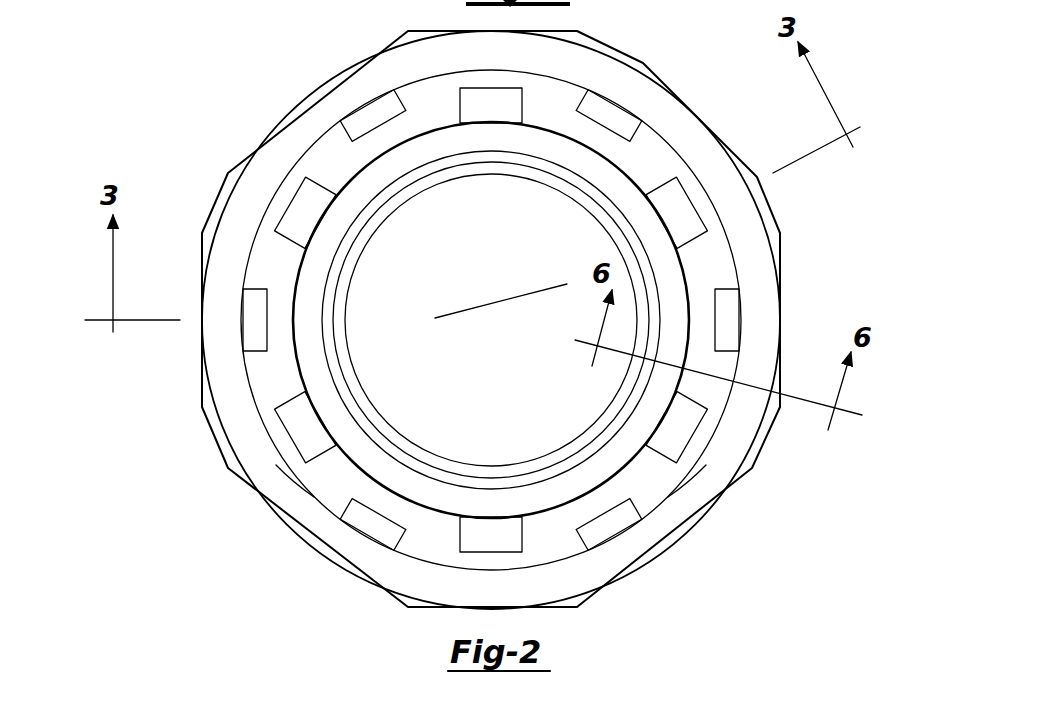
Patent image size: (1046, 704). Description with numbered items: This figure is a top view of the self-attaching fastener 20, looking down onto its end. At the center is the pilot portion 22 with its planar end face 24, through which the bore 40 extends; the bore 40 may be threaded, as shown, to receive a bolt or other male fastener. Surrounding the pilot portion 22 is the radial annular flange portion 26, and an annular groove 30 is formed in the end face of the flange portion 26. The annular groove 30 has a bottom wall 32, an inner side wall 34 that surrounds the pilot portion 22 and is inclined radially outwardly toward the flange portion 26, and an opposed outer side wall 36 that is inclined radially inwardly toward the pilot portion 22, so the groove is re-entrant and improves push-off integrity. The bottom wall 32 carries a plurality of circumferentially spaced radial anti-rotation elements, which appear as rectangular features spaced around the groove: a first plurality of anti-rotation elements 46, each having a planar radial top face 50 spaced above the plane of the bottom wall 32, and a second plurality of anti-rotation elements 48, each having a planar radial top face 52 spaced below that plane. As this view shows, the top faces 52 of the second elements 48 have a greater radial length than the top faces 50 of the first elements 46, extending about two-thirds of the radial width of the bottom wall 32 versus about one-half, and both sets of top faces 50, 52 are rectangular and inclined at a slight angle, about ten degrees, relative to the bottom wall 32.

The self-attaching fastener 20 is at (277, 96).
The central pilot portion 22 is at (622, 190).
The end face of the pilot portion 24 is at (438, 143).
The radial annular flange portion 26 is at (760, 332).
The annular groove 30 is at (331, 490).
The bottom wall of the annular groove 32 is at (322, 170).
The inner side wall of the annular groove 34 is at (637, 473).
The outer side wall of the annular groove 36 is at (727, 243).
The bore 40 is at (418, 440).
The first plurality of circumferentially spaced anti-rotation elements 46 is at (367, 114).
The second plurality of circumferentially spaced anti-rotation elements 48 is at (300, 431).
The top face of the first anti-rotation elements 50 is at (253, 316).
The top face of the second anti-rotation elements 52 is at (617, 248).